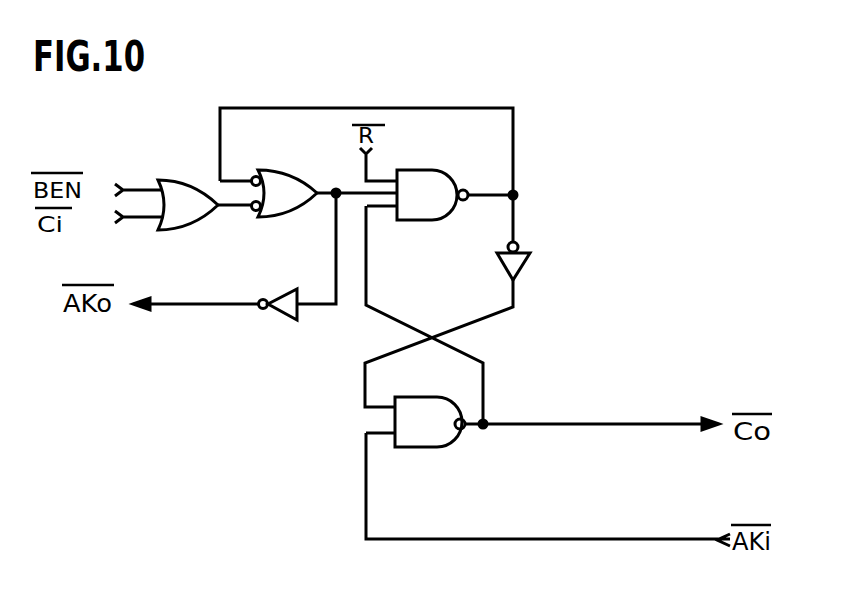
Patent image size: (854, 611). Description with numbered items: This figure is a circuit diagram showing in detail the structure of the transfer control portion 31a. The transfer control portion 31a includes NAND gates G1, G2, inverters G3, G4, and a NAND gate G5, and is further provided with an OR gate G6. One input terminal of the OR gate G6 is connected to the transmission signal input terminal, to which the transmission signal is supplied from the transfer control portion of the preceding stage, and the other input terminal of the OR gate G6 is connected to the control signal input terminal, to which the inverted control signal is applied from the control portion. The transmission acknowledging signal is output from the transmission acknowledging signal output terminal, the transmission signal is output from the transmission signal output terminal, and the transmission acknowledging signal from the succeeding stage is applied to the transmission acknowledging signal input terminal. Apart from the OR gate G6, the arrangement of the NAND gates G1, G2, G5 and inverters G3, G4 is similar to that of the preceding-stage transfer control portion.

The transfer control portion 31a is at (639, 269).
The NAND gate G1 is at (435, 448).
The NAND gate G2 is at (290, 218).
The inverter G3 is at (520, 268).
The inverter G4 is at (290, 321).
The NAND gate G5 is at (432, 221).
The OR gate G6 is at (196, 231).